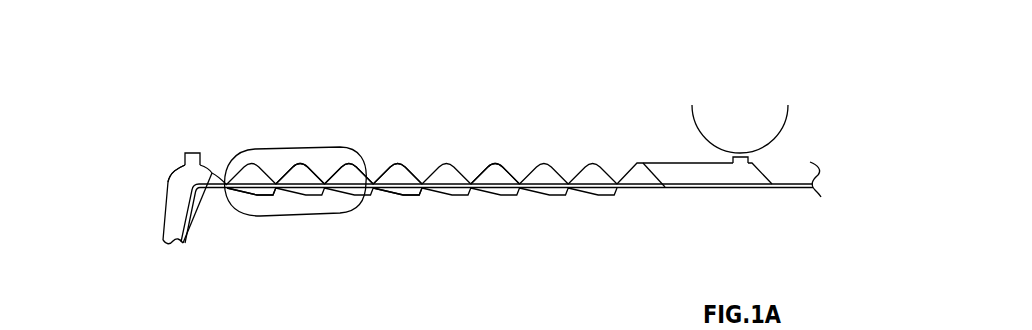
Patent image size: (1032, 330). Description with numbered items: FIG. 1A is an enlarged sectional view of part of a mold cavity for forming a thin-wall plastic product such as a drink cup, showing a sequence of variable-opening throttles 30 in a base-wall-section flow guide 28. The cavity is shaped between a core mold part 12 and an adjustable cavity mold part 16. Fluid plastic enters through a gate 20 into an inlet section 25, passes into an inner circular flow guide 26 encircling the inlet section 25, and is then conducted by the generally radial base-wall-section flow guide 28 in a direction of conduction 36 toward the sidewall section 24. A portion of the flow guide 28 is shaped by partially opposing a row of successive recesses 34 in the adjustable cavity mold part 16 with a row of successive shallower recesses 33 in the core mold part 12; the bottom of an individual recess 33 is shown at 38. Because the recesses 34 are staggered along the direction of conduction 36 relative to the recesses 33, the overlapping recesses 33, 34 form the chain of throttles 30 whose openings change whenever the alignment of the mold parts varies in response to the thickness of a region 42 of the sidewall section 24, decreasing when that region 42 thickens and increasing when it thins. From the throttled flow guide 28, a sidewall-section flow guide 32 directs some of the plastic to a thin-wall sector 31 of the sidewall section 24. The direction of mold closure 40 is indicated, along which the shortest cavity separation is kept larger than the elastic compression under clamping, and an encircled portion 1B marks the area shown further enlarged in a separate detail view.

The encircled portion 1B is at (260, 147).
The core mold part 12 is at (387, 251).
The adjustable cavity mold part 16 is at (599, 137).
The gate 20 is at (740, 163).
The sidewall section 24 is at (156, 211).
The inlet section 25 is at (693, 188).
The inner circular flow guide 26 is at (643, 183).
The base-wall-section flow guide 28 is at (509, 146).
The variable-opening throttle 30 is at (324, 185).
The thin-wall sector 31 is at (188, 222).
The sidewall-section flow guide 32 is at (170, 182).
The recess in the core mold part 33 is at (272, 188).
The recess in the adjustable cavity mold part 34 is at (291, 170).
The direction of conduction 36 is at (262, 314).
The bottom of recess 38 is at (415, 195).
The direction of mold closure 40 is at (650, 120).
The region of the sidewall section 42 is at (163, 227).